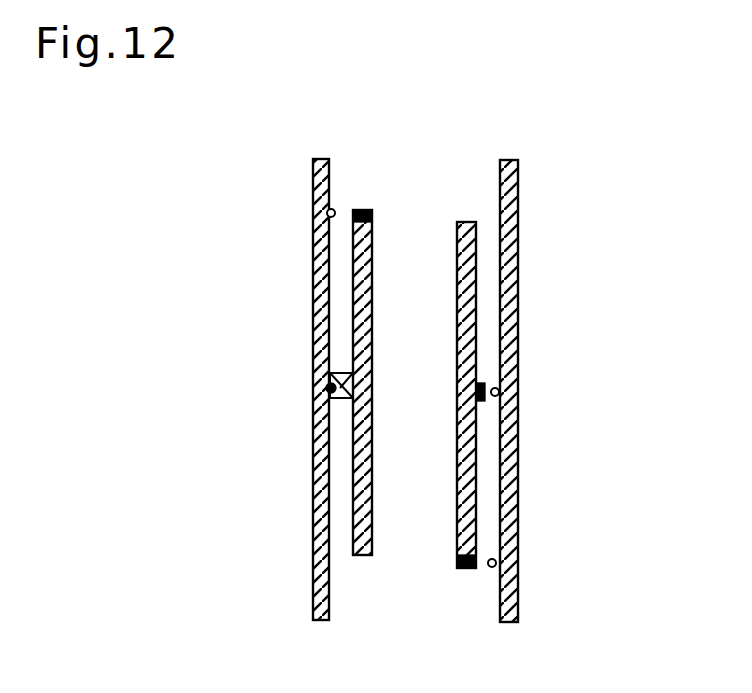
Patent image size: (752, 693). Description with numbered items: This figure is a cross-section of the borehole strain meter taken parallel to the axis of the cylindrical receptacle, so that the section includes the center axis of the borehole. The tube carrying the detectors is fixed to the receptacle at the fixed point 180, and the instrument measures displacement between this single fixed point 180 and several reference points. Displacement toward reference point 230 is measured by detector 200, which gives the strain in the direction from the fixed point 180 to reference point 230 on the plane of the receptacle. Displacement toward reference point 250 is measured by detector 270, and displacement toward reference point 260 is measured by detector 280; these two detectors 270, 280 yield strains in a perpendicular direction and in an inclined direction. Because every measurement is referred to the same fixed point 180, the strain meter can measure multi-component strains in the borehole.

The fixed point 180 is at (326, 392).
The detector 200 is at (477, 389).
The reference point 230 is at (499, 392).
The reference point 250 is at (327, 211).
The reference point 260 is at (497, 567).
The detector 270 is at (367, 212).
The detector 280 is at (462, 570).